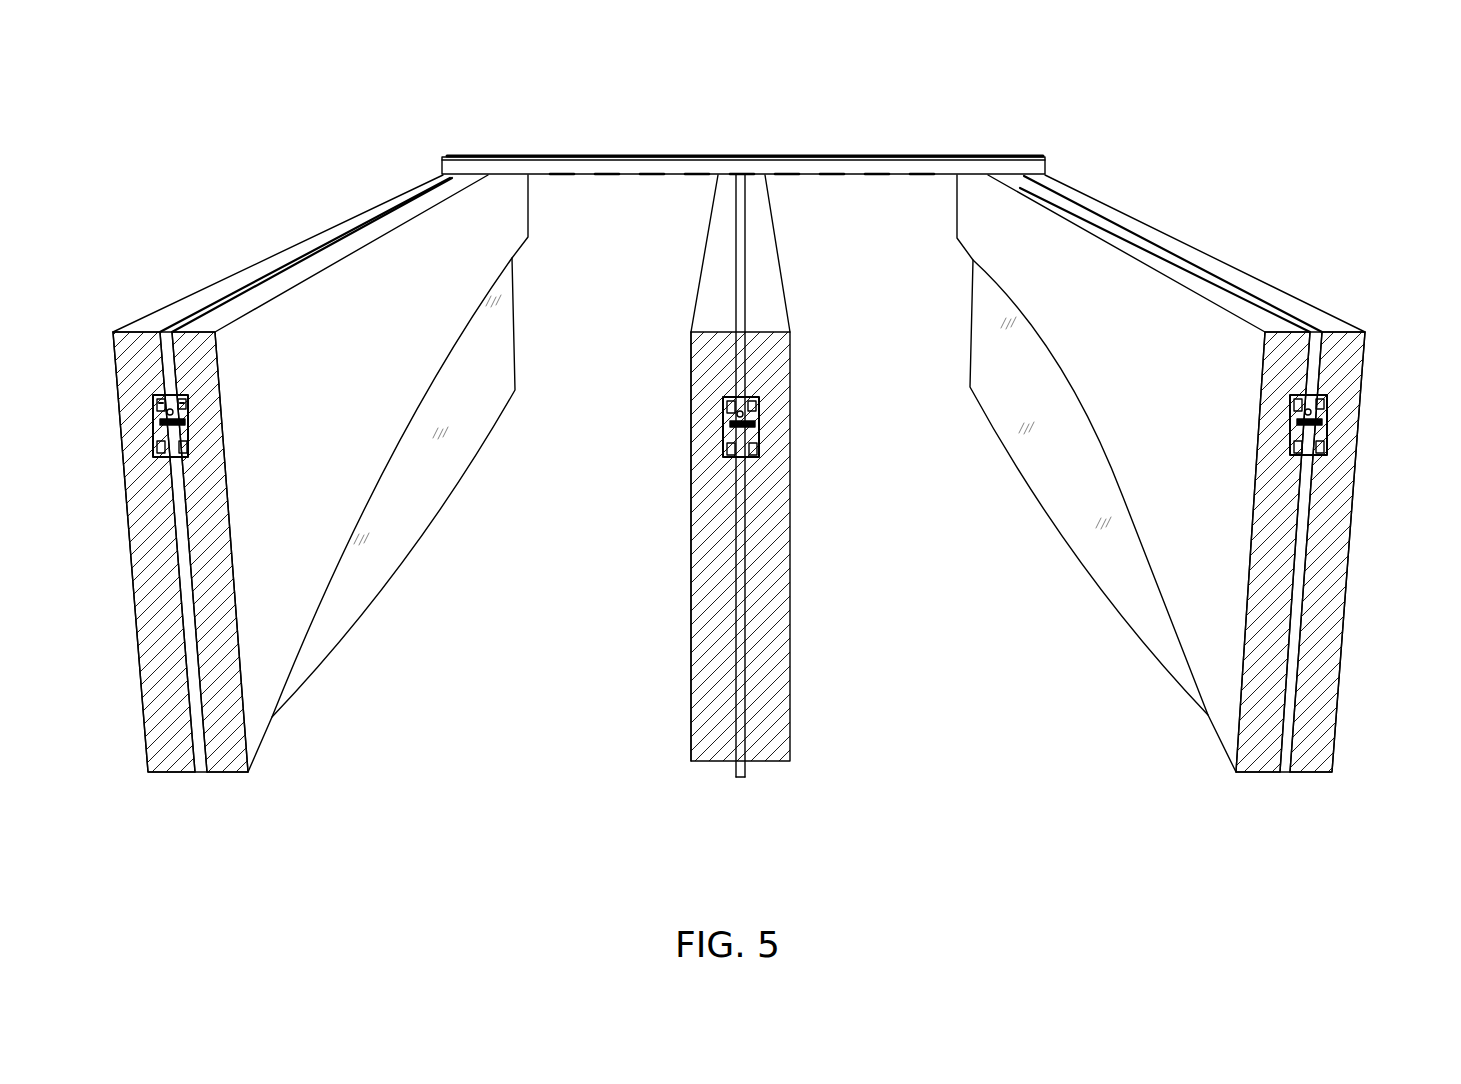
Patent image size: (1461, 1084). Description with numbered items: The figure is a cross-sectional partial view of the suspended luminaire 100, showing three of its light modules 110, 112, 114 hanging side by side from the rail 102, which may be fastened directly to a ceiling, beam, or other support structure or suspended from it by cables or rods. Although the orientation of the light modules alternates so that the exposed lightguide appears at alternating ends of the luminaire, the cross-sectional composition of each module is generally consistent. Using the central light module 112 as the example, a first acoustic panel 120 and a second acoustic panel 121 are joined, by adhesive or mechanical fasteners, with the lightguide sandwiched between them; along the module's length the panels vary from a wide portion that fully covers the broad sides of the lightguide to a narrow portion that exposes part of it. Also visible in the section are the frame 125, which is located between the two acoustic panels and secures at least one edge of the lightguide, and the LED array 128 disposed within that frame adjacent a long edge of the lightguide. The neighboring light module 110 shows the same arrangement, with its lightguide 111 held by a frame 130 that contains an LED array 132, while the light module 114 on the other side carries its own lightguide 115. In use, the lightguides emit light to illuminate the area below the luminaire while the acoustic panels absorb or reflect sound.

The suspended luminaire 100 is at (1284, 78).
The rail 102 is at (932, 153).
The light module 110 is at (1256, 830).
The lightguide 111 is at (1057, 490).
The light module 112 is at (702, 815).
The light module 114 is at (283, 862).
The lightguide 115 is at (435, 462).
The first acoustic panel 120 is at (775, 727).
The second acoustic panel 121 is at (693, 670).
The frame 125 is at (760, 410).
The LED array 128 is at (725, 425).
The frame 130 is at (1327, 411).
The LED array 132 is at (1322, 439).